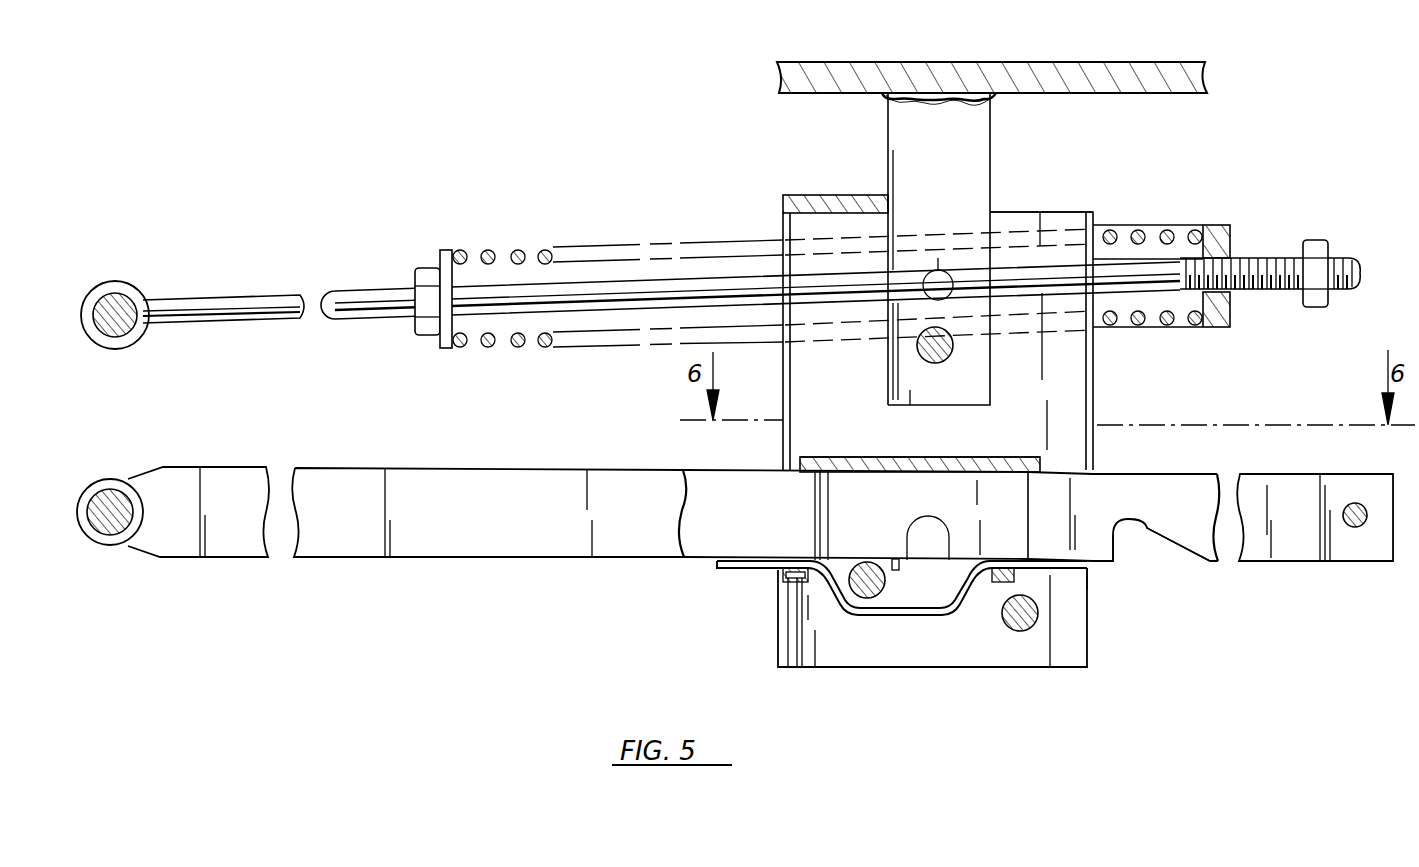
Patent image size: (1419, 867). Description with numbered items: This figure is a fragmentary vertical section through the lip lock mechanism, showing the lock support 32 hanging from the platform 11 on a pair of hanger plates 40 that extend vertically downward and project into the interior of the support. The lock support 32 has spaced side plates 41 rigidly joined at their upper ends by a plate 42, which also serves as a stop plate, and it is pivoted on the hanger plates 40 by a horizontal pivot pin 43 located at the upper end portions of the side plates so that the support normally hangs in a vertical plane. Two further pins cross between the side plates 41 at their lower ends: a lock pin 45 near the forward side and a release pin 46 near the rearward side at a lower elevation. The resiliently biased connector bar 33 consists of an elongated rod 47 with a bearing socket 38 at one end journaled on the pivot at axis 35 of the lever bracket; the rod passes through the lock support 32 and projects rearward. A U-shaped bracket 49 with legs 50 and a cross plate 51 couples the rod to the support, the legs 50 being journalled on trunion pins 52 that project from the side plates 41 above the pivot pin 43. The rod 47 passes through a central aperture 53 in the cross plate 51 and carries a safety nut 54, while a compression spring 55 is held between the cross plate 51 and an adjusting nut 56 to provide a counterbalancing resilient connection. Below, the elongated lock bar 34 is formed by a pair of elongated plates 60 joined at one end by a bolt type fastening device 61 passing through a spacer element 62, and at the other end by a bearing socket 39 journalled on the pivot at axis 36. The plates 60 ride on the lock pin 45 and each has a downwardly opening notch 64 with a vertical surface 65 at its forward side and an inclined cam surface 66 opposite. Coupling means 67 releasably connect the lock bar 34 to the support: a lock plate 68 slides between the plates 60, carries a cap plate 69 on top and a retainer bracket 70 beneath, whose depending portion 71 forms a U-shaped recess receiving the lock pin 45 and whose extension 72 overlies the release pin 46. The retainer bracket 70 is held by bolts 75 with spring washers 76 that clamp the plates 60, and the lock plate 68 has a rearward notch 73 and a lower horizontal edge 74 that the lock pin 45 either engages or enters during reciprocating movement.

The platform 11 is at (1008, 60).
The lock support 32 is at (1096, 402).
The resiliently biased connector bar 33 is at (352, 293).
The elongated lock bar 34 is at (436, 560).
The pivot axis 35 is at (122, 300).
The pivot axis 36 is at (100, 540).
The bearing socket 38 is at (118, 349).
The bearing socket 39 is at (100, 482).
The hanger plates 40 is at (972, 150).
The side plates 41 is at (1025, 213).
The plate 42 is at (838, 195).
The pivot pin 43 is at (935, 363).
The lock pin 45 is at (880, 598).
The release pin 46 is at (1010, 630).
The elongated rod 47 is at (213, 330).
The U-shaped bracket 49 is at (1130, 226).
The legs 50 is at (1136, 330).
The cross plate 51 is at (1215, 228).
The trunion pins 52 is at (940, 262).
The central aperture 53 is at (1250, 262).
The safety nut 54 is at (1312, 304).
The compression spring 55 is at (518, 250).
The adjusting nut 56 is at (434, 268).
The elongated plates 60 is at (735, 485).
The bolt type fastening device 61 is at (1367, 519).
The spacer element 62 is at (1320, 500).
The downwardly opening notch 64 is at (1142, 532).
The vertical surface 65 is at (1118, 545).
The cam surface 66 is at (1192, 560).
The coupling means 67 is at (965, 455).
The lock plate 68 is at (1015, 520).
The cap plate 69 is at (828, 457).
The retainer bracket 70 is at (832, 602).
The depending portion 71 is at (938, 618).
The extension 72 is at (1087, 576).
The downwardly opening notch 73 is at (930, 526).
The lower horizontal edge 74 is at (894, 562).
The bolts 75 is at (786, 580).
The spring washers 76 is at (782, 574).